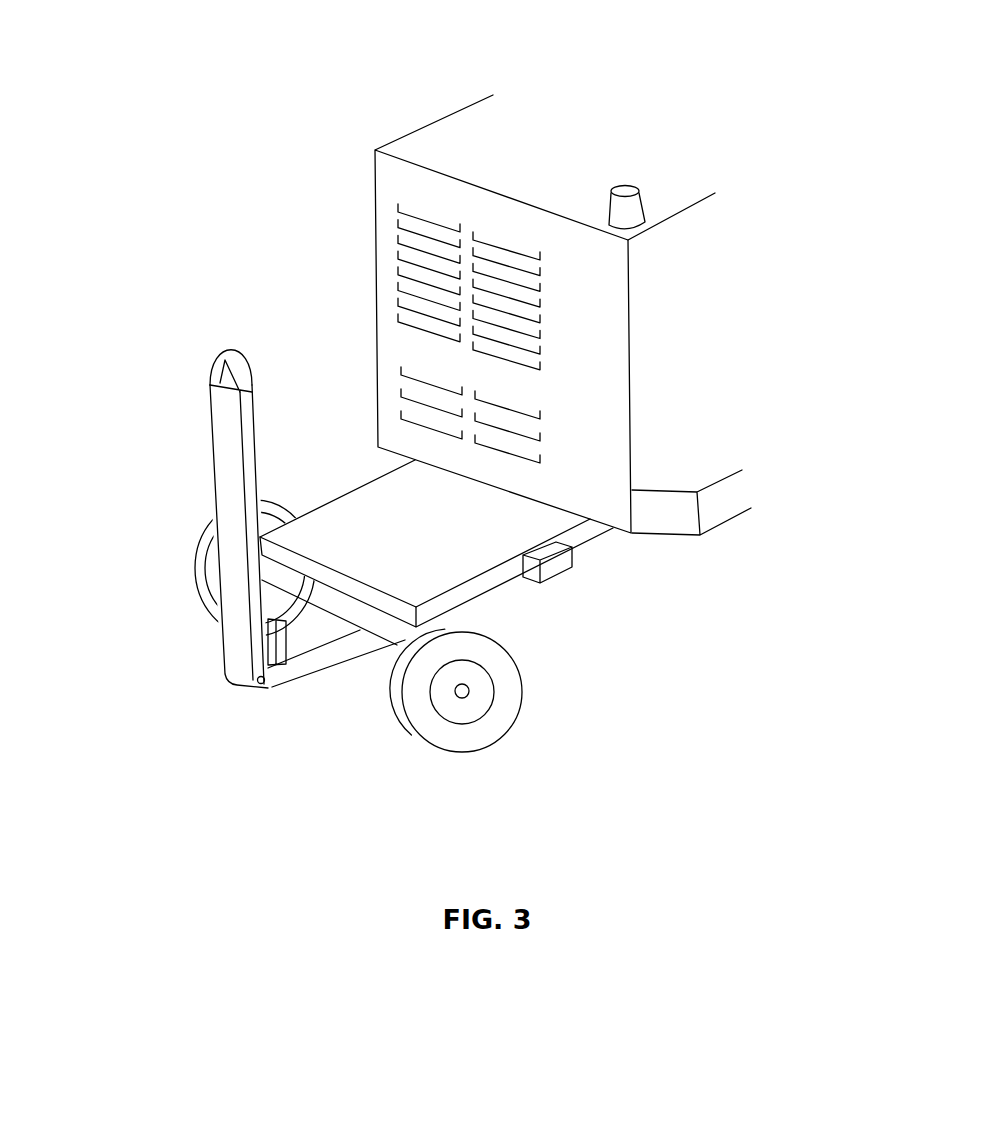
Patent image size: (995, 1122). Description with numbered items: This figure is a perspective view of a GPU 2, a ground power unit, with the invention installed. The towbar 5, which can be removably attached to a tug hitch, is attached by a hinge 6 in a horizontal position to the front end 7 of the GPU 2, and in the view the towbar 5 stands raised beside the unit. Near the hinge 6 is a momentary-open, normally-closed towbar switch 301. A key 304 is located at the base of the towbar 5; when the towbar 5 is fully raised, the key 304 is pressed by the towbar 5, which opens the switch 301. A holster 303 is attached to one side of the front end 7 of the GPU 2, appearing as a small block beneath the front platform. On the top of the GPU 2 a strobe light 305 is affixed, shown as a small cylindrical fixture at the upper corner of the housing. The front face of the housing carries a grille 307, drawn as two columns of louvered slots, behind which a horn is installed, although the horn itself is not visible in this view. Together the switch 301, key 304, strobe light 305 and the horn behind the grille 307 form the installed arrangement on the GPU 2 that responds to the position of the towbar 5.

The GPU 2 is at (277, 145).
The strobe light 305 is at (633, 208).
The grille 307 is at (420, 388).
The towbar 5 is at (235, 580).
The key 304 is at (282, 642).
The towbar switch 301 is at (255, 683).
The hinge 6 is at (259, 688).
The front end 7 is at (398, 545).
The holster 303 is at (555, 567).